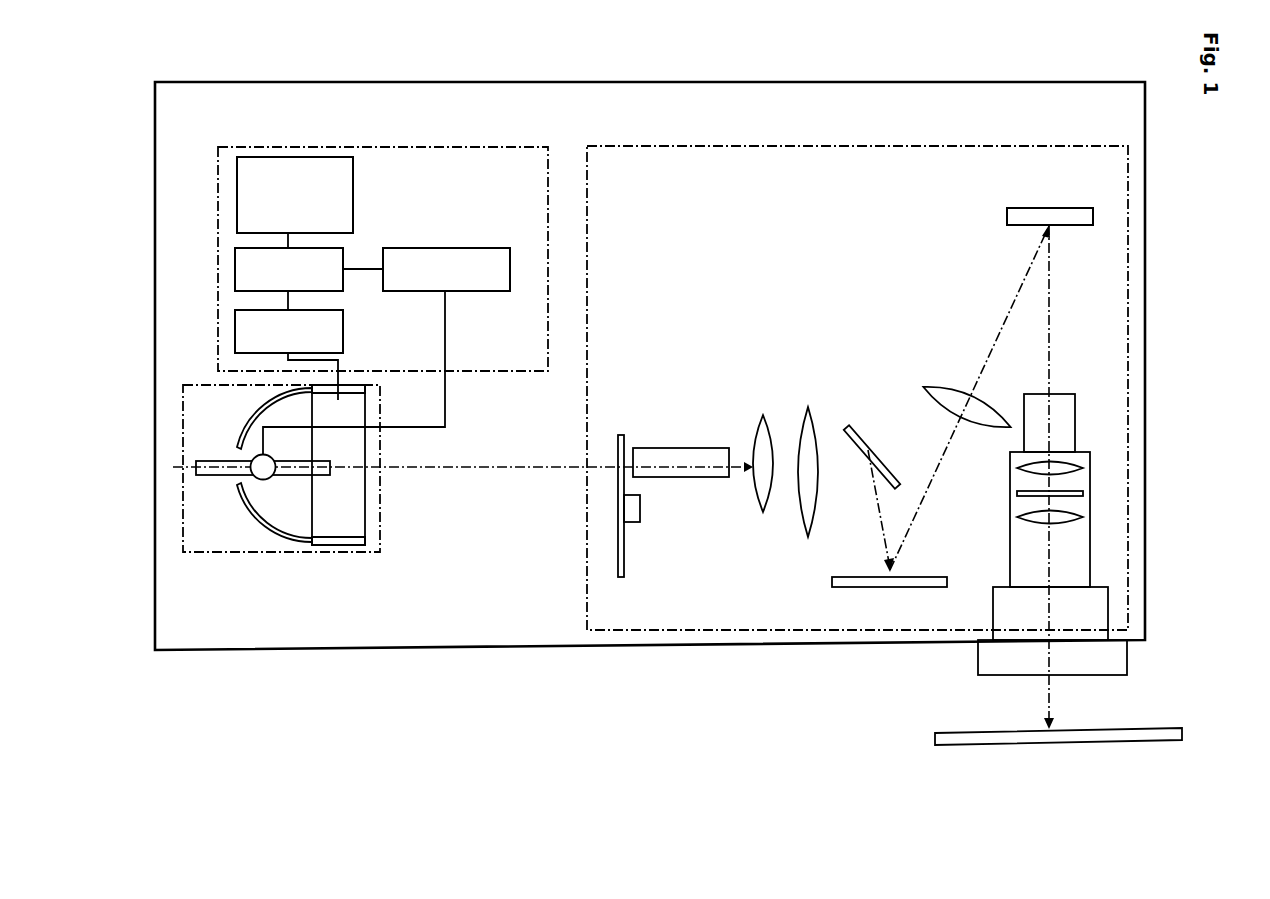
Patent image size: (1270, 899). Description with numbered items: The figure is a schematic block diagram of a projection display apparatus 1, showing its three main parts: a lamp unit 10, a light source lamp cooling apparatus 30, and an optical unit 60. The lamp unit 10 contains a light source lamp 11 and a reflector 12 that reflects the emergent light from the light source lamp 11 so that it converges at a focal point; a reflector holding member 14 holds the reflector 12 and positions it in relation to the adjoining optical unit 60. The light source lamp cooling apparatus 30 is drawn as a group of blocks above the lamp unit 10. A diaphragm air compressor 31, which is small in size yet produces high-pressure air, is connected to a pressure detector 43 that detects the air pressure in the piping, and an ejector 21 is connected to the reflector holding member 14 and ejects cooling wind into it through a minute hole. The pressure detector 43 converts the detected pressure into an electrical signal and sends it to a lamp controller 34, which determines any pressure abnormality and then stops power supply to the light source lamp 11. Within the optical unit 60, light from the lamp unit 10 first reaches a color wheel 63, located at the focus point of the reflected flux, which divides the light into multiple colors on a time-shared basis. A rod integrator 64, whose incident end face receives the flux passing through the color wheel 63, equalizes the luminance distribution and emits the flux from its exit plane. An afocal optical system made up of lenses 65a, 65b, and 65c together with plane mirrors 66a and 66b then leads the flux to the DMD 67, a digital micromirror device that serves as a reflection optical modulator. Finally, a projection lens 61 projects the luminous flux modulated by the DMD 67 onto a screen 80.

The projection display apparatus 1 is at (563, 647).
The lamp unit 10 is at (212, 552).
The light source lamp 11 is at (265, 480).
The reflector 12 is at (255, 523).
The reflector holding member 14 is at (366, 520).
The ejector 21 is at (235, 342).
The light source lamp cooling apparatus 30 is at (280, 147).
The diaphragm air compressor 31 is at (237, 183).
The lamp controller 34 is at (505, 249).
The pressure detector 43 is at (235, 277).
The optical unit 60 is at (718, 146).
The projection lens 61 is at (1090, 558).
The color wheel 63 is at (618, 530).
The rod integrator 64 is at (730, 417).
The lens 65a is at (763, 512).
The lens 65b is at (808, 537).
The lens 65c is at (957, 388).
The plane mirror 66a is at (857, 428).
The plane mirror 66b is at (850, 587).
The DMD 67 is at (1067, 208).
The screen 80 is at (947, 733).